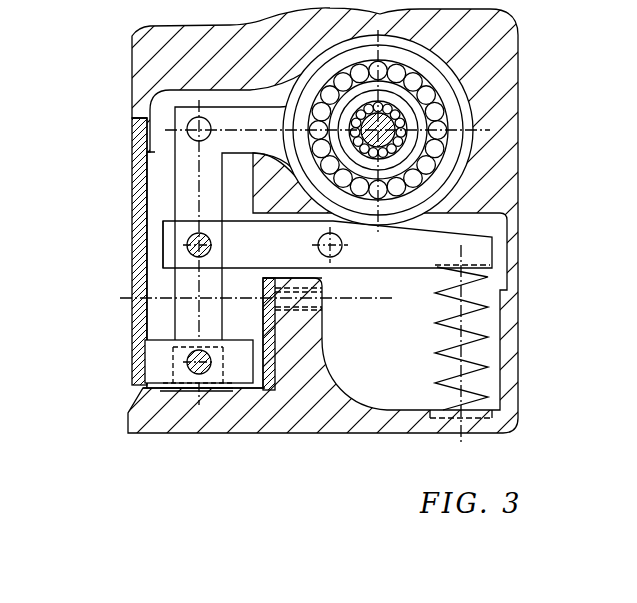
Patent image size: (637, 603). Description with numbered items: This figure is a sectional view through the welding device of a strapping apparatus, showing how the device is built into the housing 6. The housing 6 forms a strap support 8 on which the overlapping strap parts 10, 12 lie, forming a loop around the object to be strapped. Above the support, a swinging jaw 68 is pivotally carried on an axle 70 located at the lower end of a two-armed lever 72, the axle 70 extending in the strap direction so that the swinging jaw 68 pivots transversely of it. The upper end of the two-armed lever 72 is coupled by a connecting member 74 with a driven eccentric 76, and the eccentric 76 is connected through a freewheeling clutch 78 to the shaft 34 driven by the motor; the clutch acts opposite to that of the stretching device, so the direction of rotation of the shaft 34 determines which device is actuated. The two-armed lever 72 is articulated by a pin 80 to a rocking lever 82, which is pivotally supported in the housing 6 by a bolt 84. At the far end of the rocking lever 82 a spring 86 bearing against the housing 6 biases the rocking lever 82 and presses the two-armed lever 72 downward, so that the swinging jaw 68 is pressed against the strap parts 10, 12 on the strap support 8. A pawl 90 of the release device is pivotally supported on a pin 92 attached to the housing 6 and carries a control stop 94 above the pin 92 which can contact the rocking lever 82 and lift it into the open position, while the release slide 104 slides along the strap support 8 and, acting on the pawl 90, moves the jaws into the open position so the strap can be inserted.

The housing 6 is at (147, 73).
The strap support 8 is at (158, 418).
The strap part 10 is at (190, 437).
The strap part 12 is at (200, 436).
The shaft 34 is at (400, 152).
The swinging jaw 68 is at (160, 372).
The axle 70 is at (181, 353).
The two-armed lever 72 is at (185, 176).
The connecting member 74 is at (282, 134).
The eccentric 76 is at (405, 147).
The freewheeling clutch 78 is at (433, 115).
The pin 80 is at (168, 246).
The rocking lever 82 is at (170, 232).
The bolt 84 is at (343, 256).
The spring 86 is at (435, 380).
The pawl 90 is at (322, 305).
The pin 92 is at (163, 288).
The control stop 94 is at (271, 278).
The release slide 104 is at (250, 363).